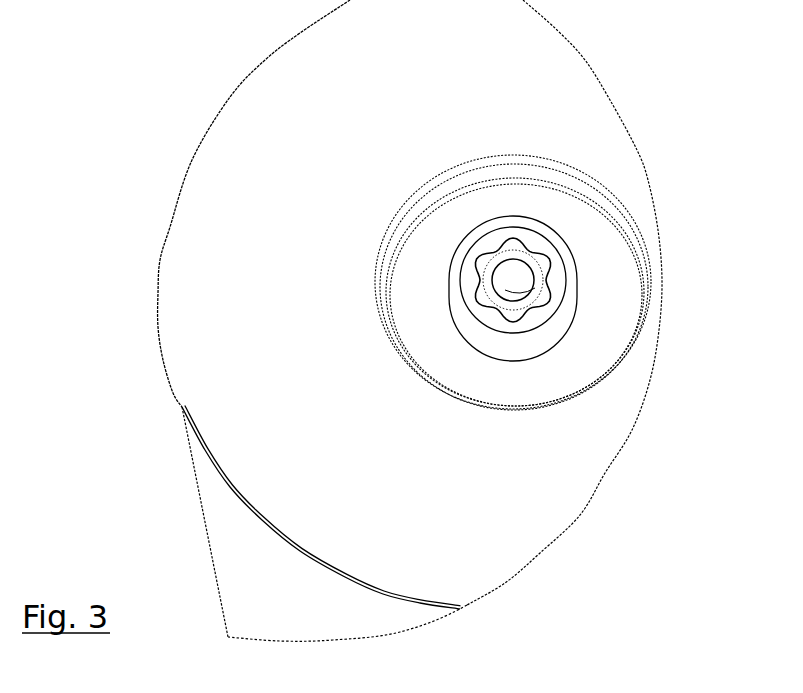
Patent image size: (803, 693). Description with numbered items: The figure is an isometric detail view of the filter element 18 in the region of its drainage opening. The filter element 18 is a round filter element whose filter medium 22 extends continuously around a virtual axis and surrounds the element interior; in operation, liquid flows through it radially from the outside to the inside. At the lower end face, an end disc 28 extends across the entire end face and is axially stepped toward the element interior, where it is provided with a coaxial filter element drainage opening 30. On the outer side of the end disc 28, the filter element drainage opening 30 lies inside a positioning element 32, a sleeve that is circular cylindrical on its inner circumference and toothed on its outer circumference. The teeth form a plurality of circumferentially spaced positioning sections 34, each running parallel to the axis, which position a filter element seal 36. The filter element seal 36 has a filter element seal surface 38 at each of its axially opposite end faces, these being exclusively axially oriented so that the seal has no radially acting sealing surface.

The filter element 18 is at (181, 161).
The filter medium 22 is at (243, 565).
The end disc 28 is at (187, 267).
The filter element drainage opening 30 is at (517, 283).
The positioning element 32 is at (540, 273).
The positioning sections 34 is at (508, 245).
The filter element seal 36 is at (482, 333).
The filter element seal surface 38 is at (470, 243).